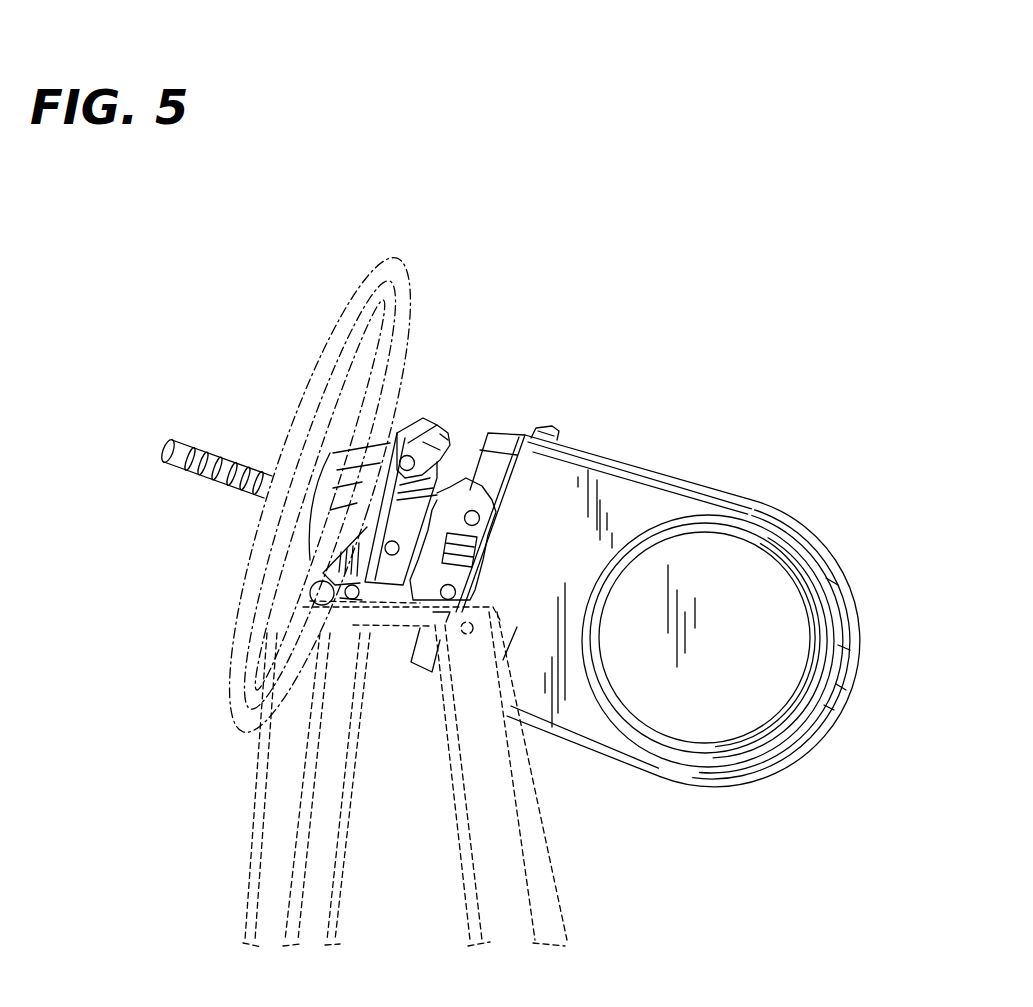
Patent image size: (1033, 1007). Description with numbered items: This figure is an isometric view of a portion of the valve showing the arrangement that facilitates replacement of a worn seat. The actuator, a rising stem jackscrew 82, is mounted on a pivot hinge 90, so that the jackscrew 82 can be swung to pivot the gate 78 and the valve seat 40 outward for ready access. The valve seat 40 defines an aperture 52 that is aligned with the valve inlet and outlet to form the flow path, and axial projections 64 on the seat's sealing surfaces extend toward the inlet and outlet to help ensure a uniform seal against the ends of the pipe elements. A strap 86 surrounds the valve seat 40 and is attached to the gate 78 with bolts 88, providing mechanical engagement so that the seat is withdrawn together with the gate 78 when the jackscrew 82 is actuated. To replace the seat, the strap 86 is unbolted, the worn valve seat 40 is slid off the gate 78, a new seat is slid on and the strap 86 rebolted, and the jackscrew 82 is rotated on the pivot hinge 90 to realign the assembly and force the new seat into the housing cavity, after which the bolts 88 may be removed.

The valve seat 40 is at (647, 493).
The aperture 52 is at (785, 622).
The axial projections 64 is at (743, 525).
The gate 78 is at (782, 670).
The rising stem jackscrew 82 is at (206, 447).
The strap 86 is at (627, 463).
The bolts 88 is at (542, 427).
The pivot hinge 90 is at (310, 592).